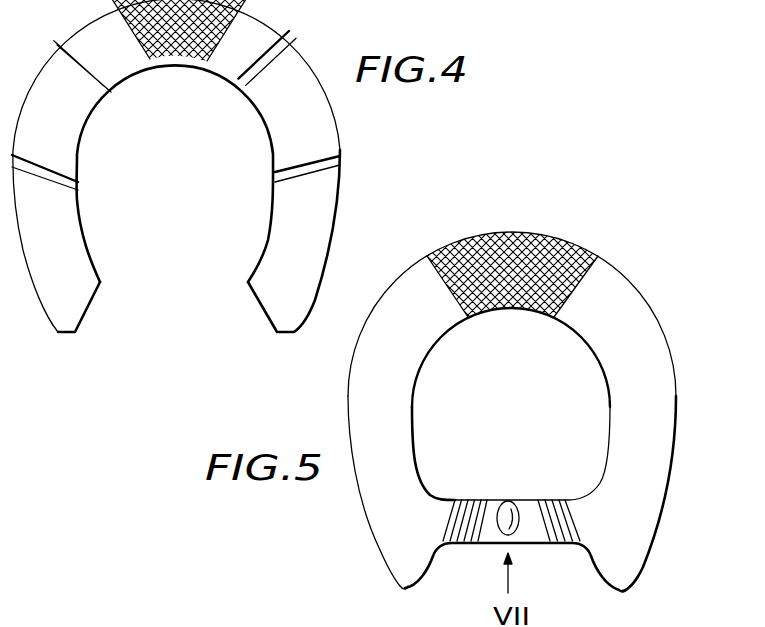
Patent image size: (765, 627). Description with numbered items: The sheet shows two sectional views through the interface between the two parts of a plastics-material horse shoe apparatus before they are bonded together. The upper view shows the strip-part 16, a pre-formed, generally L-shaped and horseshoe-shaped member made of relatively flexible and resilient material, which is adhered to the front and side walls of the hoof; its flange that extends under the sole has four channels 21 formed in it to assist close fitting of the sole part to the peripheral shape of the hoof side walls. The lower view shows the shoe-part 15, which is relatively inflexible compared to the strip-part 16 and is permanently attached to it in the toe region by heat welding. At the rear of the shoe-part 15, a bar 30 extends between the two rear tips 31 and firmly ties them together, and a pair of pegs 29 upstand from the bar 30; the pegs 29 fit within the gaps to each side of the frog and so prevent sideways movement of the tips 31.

In FIG. 5, the shoe-part 15 is at (640, 288).
In FIG. 4, the strip-part 16 is at (278, 246).
In FIG. 4, the channels 21 is at (238, 80).
In FIG. 5, the pegs 29 is at (472, 532).
In FIG. 5, the bar 30 is at (527, 507).
In FIG. 5, the rear tips 31 is at (398, 585).